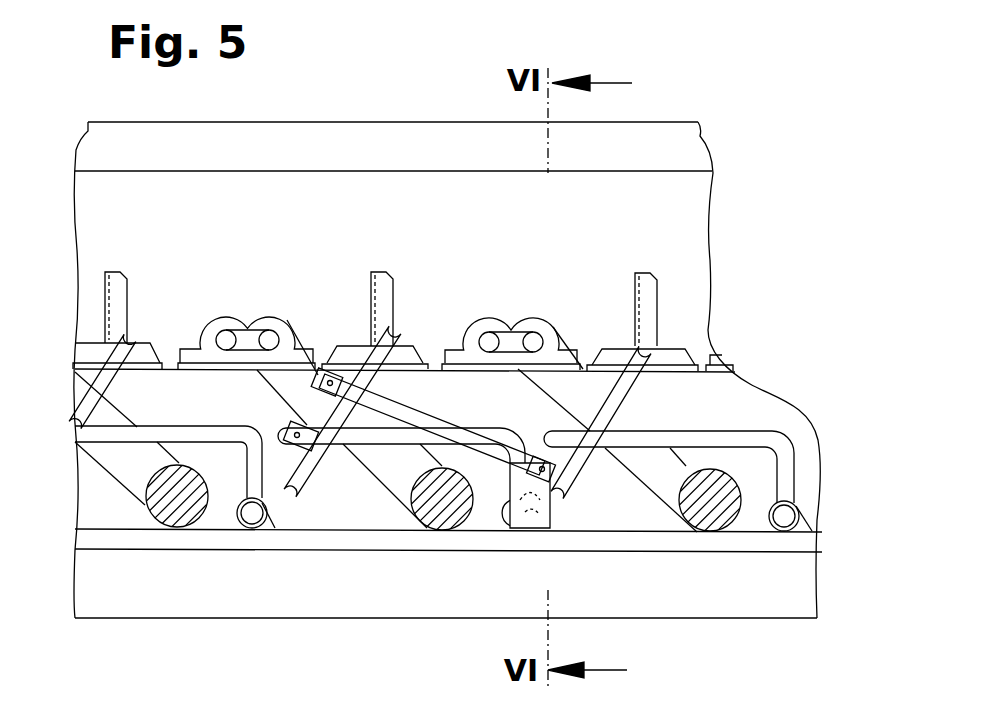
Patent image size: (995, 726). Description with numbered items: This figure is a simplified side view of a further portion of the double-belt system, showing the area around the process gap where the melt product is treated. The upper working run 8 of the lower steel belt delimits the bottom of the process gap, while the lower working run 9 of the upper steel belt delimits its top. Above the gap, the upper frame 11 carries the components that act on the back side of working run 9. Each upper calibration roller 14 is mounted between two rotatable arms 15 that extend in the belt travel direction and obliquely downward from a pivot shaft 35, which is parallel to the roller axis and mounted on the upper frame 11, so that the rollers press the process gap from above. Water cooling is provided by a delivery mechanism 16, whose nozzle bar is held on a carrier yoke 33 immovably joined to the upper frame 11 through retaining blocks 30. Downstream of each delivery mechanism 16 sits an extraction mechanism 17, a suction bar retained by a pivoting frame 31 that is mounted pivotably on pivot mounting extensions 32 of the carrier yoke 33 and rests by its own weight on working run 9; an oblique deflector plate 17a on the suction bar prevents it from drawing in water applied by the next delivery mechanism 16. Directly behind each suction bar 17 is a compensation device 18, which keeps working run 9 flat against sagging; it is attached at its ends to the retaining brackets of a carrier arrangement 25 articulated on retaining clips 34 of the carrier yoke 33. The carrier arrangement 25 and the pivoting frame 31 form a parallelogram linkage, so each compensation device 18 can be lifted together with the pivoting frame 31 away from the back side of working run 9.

The upper working run 8 is at (117, 541).
The lower working run 9 is at (95, 532).
The upper frame 11 is at (167, 383).
The calibration roller 14 is at (195, 513).
The arm 15 is at (124, 470).
The delivery mechanism 16 is at (298, 494).
The extraction mechanism 17 is at (266, 524).
The deflector plate 17a is at (281, 522).
The compensation device 18 is at (560, 516).
The carrier arrangement 25 is at (540, 458).
The retaining block 30 is at (388, 305).
The pivoting frame 31 is at (490, 432).
The pivot mounting extension 32 is at (292, 425).
The carrier yoke 33 is at (366, 378).
The retaining clip 34 is at (319, 374).
The pivot shaft 35 is at (534, 342).